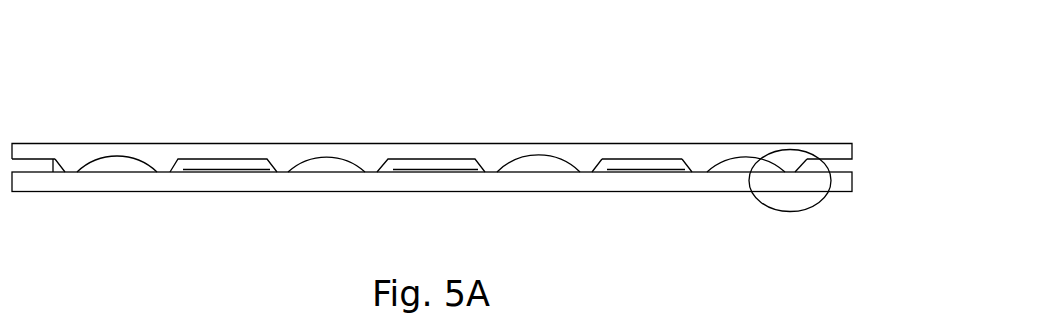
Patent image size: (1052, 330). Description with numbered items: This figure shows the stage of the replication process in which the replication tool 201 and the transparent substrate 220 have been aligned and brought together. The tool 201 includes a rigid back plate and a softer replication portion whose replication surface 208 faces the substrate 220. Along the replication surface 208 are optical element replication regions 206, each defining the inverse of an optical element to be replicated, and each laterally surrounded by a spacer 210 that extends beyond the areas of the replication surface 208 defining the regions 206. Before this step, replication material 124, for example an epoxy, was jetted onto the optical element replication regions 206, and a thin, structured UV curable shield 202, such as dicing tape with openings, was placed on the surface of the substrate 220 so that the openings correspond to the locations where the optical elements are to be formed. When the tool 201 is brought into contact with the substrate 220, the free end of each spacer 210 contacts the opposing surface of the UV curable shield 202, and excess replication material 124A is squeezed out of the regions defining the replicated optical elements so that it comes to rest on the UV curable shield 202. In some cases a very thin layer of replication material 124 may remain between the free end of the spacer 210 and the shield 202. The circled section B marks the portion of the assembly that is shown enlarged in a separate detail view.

The replication tool 201 is at (845, 139).
The UV curable shield 202 is at (638, 168).
The excess replication material 124A is at (601, 162).
The optical element replication region 206 is at (543, 156).
The spacer 210 is at (497, 172).
The replication material 124 is at (532, 164).
The replication surface 208 is at (842, 161).
The substrate 220 is at (840, 192).
The section B is at (765, 207).